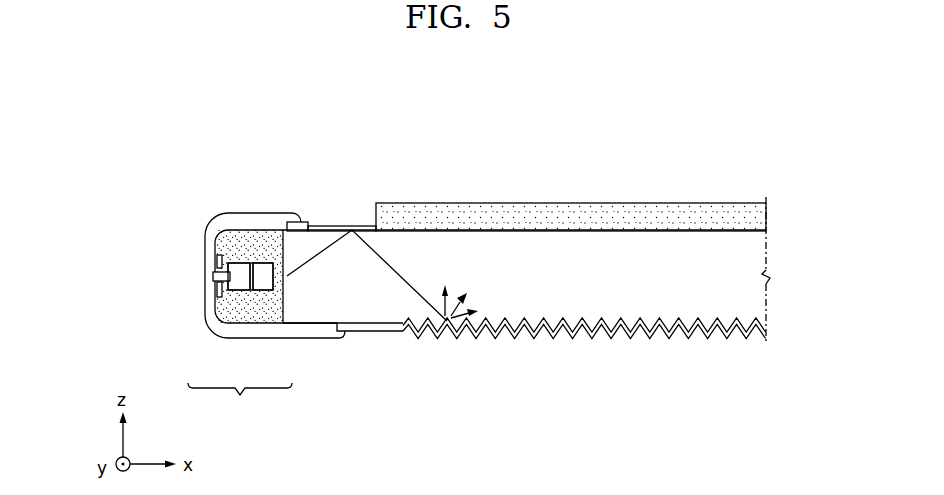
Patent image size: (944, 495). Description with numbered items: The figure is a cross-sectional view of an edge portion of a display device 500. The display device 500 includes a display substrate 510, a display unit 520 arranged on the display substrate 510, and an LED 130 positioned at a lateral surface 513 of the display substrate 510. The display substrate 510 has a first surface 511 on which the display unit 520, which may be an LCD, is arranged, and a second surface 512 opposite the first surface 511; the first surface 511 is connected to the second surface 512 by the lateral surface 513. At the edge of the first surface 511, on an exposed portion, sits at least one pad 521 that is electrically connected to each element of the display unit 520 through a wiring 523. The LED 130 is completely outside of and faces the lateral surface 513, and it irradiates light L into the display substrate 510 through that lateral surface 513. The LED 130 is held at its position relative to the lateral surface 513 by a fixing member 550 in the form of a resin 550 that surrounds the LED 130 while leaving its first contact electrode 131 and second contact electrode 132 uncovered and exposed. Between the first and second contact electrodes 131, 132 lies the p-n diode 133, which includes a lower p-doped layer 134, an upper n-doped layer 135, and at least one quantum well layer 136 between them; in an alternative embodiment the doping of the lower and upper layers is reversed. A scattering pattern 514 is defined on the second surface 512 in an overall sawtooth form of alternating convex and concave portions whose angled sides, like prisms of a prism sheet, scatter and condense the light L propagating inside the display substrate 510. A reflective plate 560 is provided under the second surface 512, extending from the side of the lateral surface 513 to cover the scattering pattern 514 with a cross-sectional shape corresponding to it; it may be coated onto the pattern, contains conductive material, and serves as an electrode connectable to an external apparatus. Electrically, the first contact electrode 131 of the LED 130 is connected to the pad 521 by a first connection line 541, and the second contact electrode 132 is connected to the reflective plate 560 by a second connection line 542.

The display device 500 is at (737, 131).
The display substrate 510 is at (766, 297).
The first surface 511 is at (533, 203).
The second surface 512 is at (377, 331).
The lateral surface 513 is at (284, 300).
The scattering pattern 514 is at (563, 328).
The display unit 520 is at (766, 219).
The pad 521 is at (305, 222).
The wiring 523 is at (342, 226).
The first connection line 541 is at (228, 213).
The second connection line 542 is at (300, 337).
The fixing member 550 is at (238, 246).
The reflective plate 560 is at (640, 330).
The LED 130 is at (212, 305).
The first contact electrode 131 is at (217, 262).
The second contact electrode 132 is at (217, 289).
The p-n diode 133 is at (240, 404).
The lower p-doped layer 134 is at (227, 292).
The upper n-doped layer 135 is at (267, 292).
The quantum well layer 136 is at (248, 292).
The light L is at (463, 320).